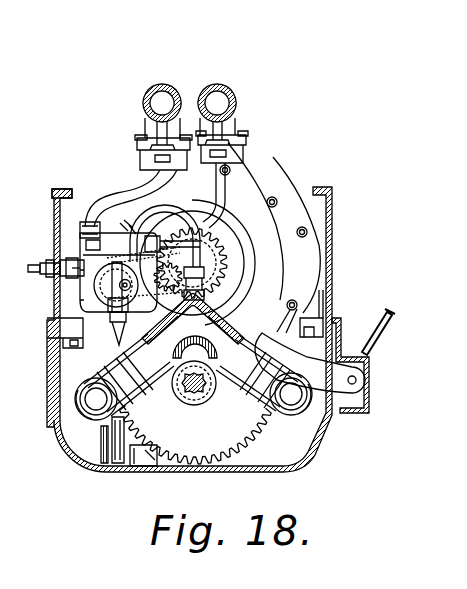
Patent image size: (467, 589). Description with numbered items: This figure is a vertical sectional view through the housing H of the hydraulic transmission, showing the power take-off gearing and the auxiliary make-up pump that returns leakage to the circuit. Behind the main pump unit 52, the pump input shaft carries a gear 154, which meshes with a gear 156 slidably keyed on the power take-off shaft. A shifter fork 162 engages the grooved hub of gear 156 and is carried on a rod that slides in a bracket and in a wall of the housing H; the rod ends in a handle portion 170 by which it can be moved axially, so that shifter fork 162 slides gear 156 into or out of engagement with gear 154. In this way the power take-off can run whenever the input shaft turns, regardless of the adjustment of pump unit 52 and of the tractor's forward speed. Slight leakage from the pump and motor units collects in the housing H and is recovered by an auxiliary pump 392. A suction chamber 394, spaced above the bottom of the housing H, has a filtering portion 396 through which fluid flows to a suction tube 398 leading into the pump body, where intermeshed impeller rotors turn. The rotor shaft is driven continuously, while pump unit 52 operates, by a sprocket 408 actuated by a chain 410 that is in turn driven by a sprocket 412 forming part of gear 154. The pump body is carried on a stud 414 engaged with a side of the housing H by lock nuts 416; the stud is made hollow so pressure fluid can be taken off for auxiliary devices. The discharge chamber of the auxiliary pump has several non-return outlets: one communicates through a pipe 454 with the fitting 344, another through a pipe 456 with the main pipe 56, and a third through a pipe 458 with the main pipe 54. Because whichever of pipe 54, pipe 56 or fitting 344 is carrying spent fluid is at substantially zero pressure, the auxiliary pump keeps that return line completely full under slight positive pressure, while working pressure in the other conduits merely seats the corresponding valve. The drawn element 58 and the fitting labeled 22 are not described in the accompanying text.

The pump unit 52 is at (290, 200).
The pipe 54 is at (232, 82).
The pipe 56 is at (150, 82).
The drive shaft 58 is at (190, 404).
The gear 154 is at (212, 232).
The gear 156 is at (248, 428).
The shifter fork 162 is at (313, 354).
The handle portion 170 is at (391, 316).
The fitting 22 is at (30, 269).
The fitting 344 is at (235, 282).
The auxiliary pump 392 is at (55, 220).
The suction chamber 394 is at (102, 466).
The filtering portion 396 is at (118, 465).
The suction tube 398 is at (150, 468).
The sprocket 408 is at (80, 297).
The chain 410 is at (113, 332).
The sprocket 412 is at (226, 256).
The stud 414 is at (72, 258).
The lock nuts 416 is at (48, 262).
The pipe 454 is at (203, 215).
The pipe 456 is at (112, 200).
The pipe 458 is at (210, 212).
The housing H is at (74, 467).